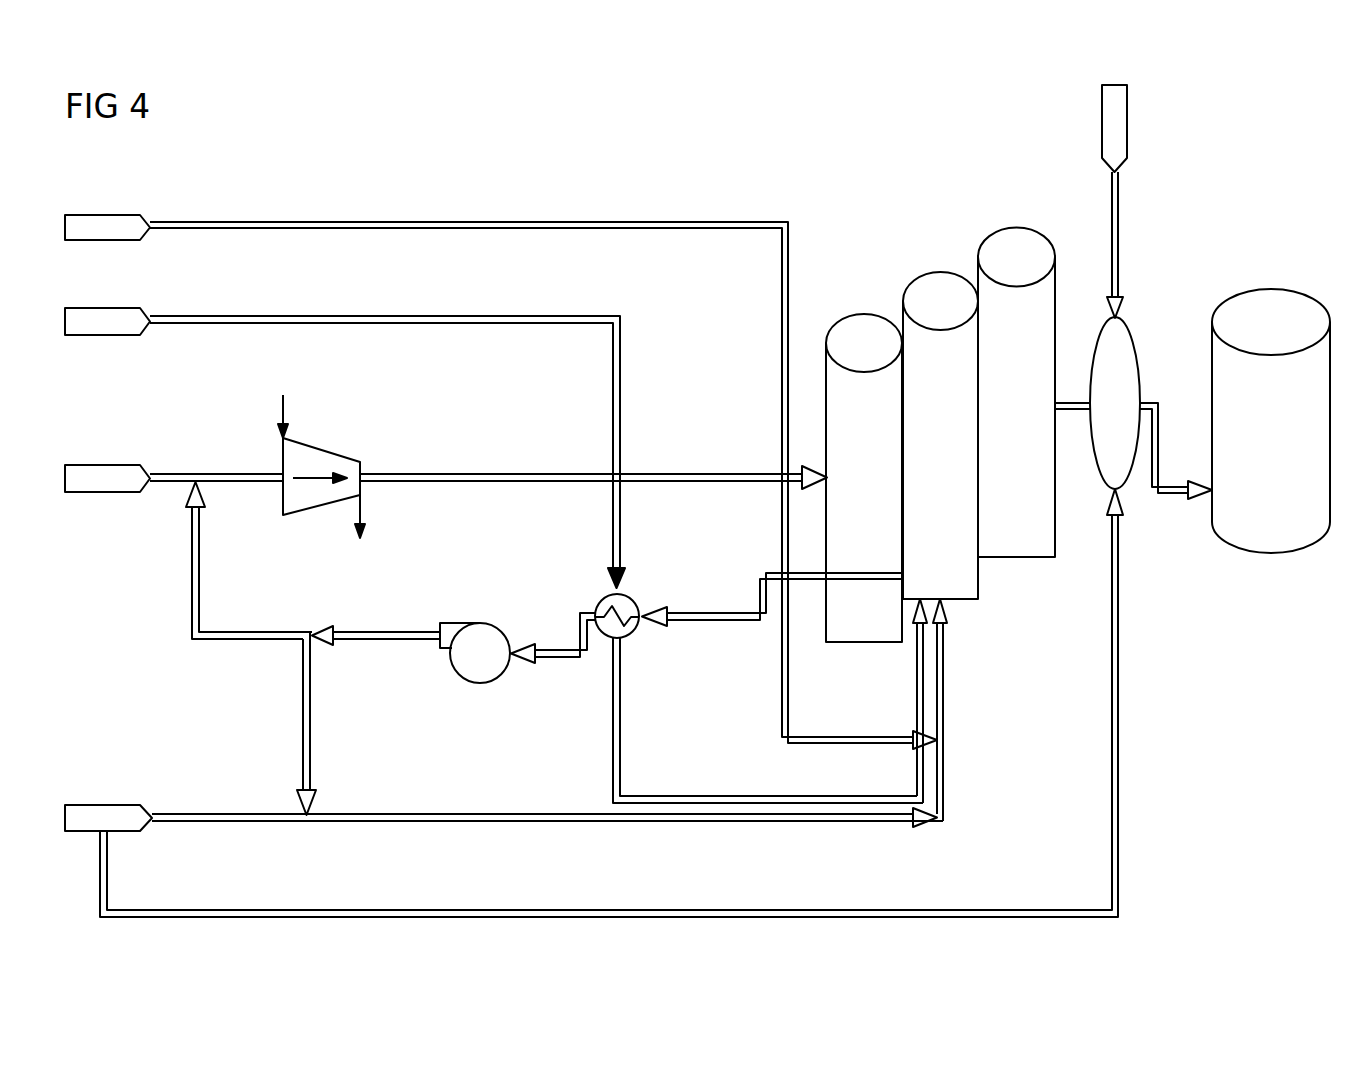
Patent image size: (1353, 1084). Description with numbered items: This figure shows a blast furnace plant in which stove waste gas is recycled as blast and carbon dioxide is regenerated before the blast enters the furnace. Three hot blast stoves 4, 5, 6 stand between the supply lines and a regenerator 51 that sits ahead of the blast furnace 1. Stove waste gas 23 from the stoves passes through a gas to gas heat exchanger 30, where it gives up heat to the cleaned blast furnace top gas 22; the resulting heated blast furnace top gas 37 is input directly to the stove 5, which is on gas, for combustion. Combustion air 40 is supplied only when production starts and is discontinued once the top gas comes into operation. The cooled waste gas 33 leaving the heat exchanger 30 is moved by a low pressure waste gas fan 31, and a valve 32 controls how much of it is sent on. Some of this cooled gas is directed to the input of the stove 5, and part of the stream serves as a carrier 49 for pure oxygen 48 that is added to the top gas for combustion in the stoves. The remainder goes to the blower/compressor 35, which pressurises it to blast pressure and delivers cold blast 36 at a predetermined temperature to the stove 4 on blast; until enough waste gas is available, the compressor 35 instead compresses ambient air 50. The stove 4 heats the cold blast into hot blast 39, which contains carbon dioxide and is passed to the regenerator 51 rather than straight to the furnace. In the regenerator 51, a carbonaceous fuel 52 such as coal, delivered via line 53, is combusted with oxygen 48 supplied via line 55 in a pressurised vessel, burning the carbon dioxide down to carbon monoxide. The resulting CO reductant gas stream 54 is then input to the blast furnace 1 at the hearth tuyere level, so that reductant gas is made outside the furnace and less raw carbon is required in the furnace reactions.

The blast furnace 1 is at (1271, 288).
The stove 4 is at (862, 315).
The stove 5 is at (940, 272).
The stove 6 is at (1016, 228).
The blast furnace top gas 22 is at (400, 316).
The stove waste gas 23 is at (700, 613).
The heat exchanger 30 is at (597, 605).
The waste gas fan 31 is at (470, 623).
The valve 32 is at (917, 685).
The cooled waste gas 33 is at (192, 565).
The blower/compressor 35 is at (328, 452).
The cold blast 36 is at (700, 473).
The heated blast furnace top gas 37 is at (700, 796).
The hot blast 39 is at (1070, 409).
The combustion air 40 is at (400, 222).
The oxygen 48 is at (100, 805).
The carrier 49 is at (627, 836).
The ambient air 50 is at (100, 465).
The regenerator 51 is at (1135, 345).
The carbonaceous fuel 52 is at (1128, 120).
The line 53 is at (1118, 231).
The CO reductant gas stream 54 is at (1170, 493).
The line 55 is at (791, 910).